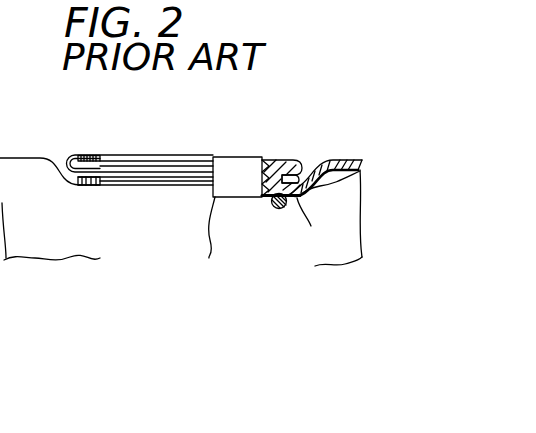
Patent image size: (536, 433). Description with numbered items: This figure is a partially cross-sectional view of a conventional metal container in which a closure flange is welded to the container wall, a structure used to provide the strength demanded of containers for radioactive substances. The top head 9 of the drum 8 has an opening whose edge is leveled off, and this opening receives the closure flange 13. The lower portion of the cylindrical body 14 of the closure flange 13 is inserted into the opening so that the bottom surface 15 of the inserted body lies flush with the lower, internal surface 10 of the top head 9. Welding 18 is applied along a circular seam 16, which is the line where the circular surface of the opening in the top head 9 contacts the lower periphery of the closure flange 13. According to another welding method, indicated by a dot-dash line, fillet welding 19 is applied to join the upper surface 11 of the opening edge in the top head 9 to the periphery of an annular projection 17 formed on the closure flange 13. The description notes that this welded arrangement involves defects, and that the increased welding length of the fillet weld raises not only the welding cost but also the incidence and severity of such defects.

The drum 8 is at (343, 217).
The top head 9 is at (353, 160).
The lower surface of the top head 10 is at (315, 218).
The upper surface of the opening edge 11 is at (340, 180).
The closure flange 13 is at (239, 167).
The cylindrical body 14 is at (222, 184).
The bottom surface 15 is at (237, 198).
The circular seam 16 is at (266, 201).
The annular projection 17 is at (283, 167).
The welding 18 is at (281, 208).
The fillet welding 19 is at (306, 165).